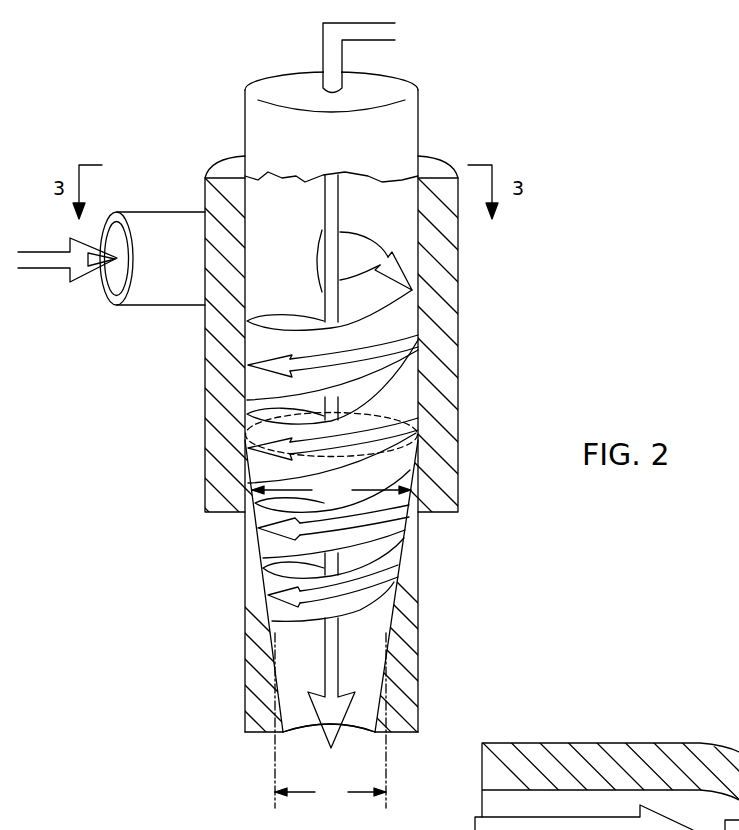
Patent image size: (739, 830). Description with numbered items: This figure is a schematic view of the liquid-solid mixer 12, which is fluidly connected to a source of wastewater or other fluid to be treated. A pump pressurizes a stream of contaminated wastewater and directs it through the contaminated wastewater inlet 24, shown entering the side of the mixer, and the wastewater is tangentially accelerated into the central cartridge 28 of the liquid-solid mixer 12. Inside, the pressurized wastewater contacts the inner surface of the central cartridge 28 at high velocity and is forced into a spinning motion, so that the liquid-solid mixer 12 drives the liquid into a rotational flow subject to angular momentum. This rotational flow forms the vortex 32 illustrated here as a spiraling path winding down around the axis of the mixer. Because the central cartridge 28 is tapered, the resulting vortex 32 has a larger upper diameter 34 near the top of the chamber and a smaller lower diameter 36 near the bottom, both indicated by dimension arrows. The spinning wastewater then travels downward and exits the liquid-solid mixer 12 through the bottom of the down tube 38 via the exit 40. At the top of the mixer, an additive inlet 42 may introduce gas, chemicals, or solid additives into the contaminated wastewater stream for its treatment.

The liquid-solid mixer 12 is at (578, 122).
The contaminated wastewater inlet 24 is at (115, 280).
The central cartridge 28 is at (418, 262).
The vortex 32 is at (410, 348).
The upper diameter 34 is at (331, 490).
The lower diameter 36 is at (330, 720).
The down tube 38 is at (418, 580).
The exit 40 is at (308, 723).
The additive inlet 42 is at (323, 45).